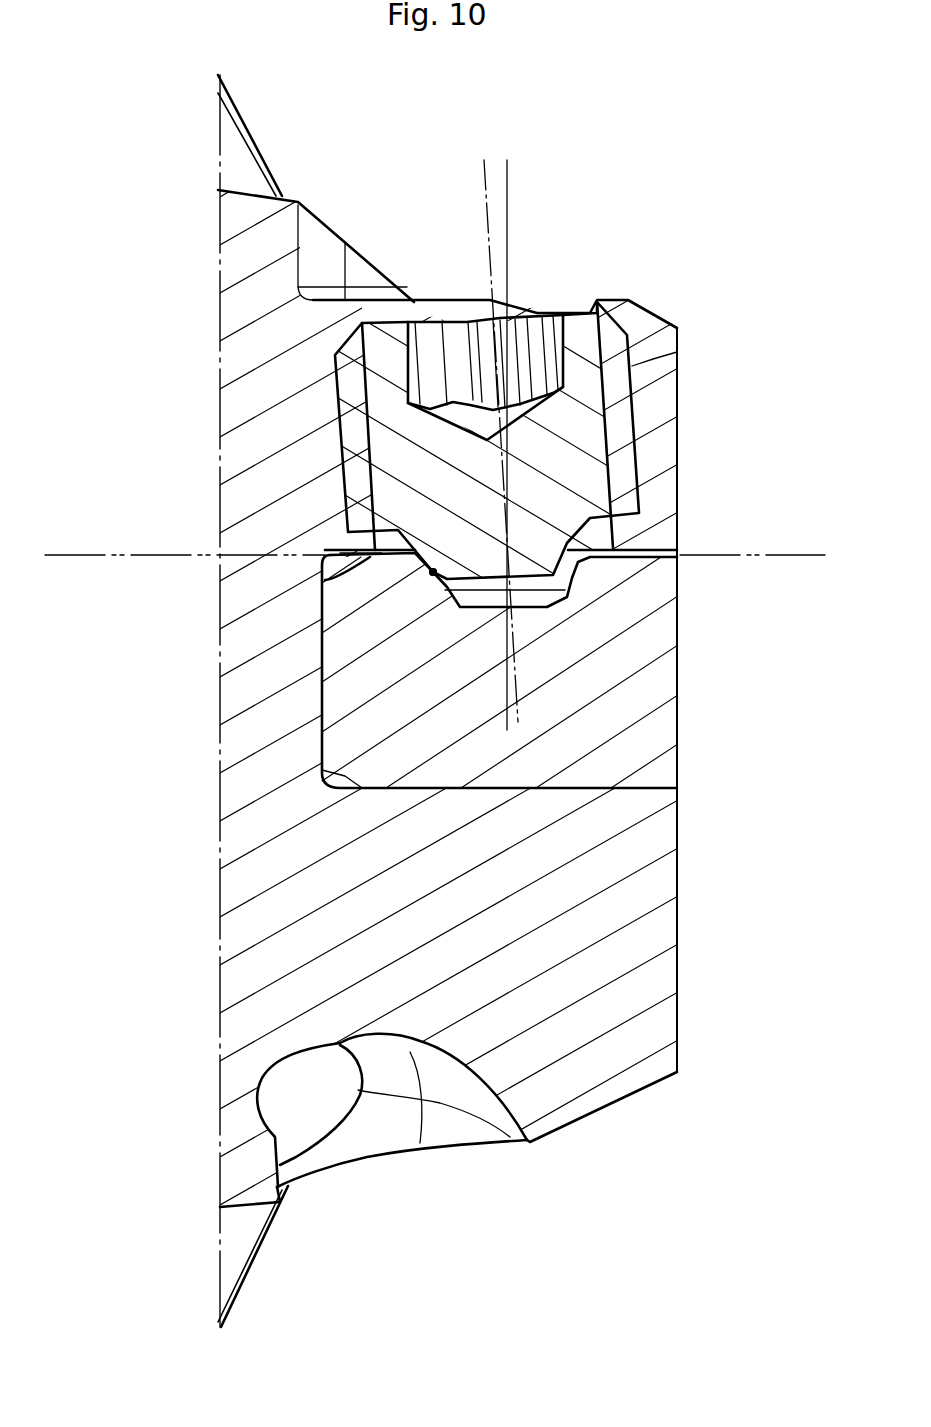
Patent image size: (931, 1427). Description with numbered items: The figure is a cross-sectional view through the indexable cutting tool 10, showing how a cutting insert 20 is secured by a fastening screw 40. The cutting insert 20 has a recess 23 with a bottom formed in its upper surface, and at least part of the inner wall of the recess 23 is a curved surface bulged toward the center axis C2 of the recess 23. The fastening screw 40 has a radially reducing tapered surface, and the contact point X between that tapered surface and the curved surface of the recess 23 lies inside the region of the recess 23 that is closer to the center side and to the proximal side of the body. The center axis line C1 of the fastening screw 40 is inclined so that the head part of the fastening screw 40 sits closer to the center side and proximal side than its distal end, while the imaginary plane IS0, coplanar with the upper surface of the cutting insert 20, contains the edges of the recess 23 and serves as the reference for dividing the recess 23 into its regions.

The indexable cutting tool 10 is at (504, 701).
The cutting insert 20 is at (610, 1108).
The recess 23 is at (533, 603).
The fastening screw 40 is at (633, 367).
The contact point X is at (433, 574).
The imaginary plane IS0 is at (140, 556).
The center axis line of the fastening screw C1 is at (485, 203).
The center axis of the recess C2 is at (507, 205).